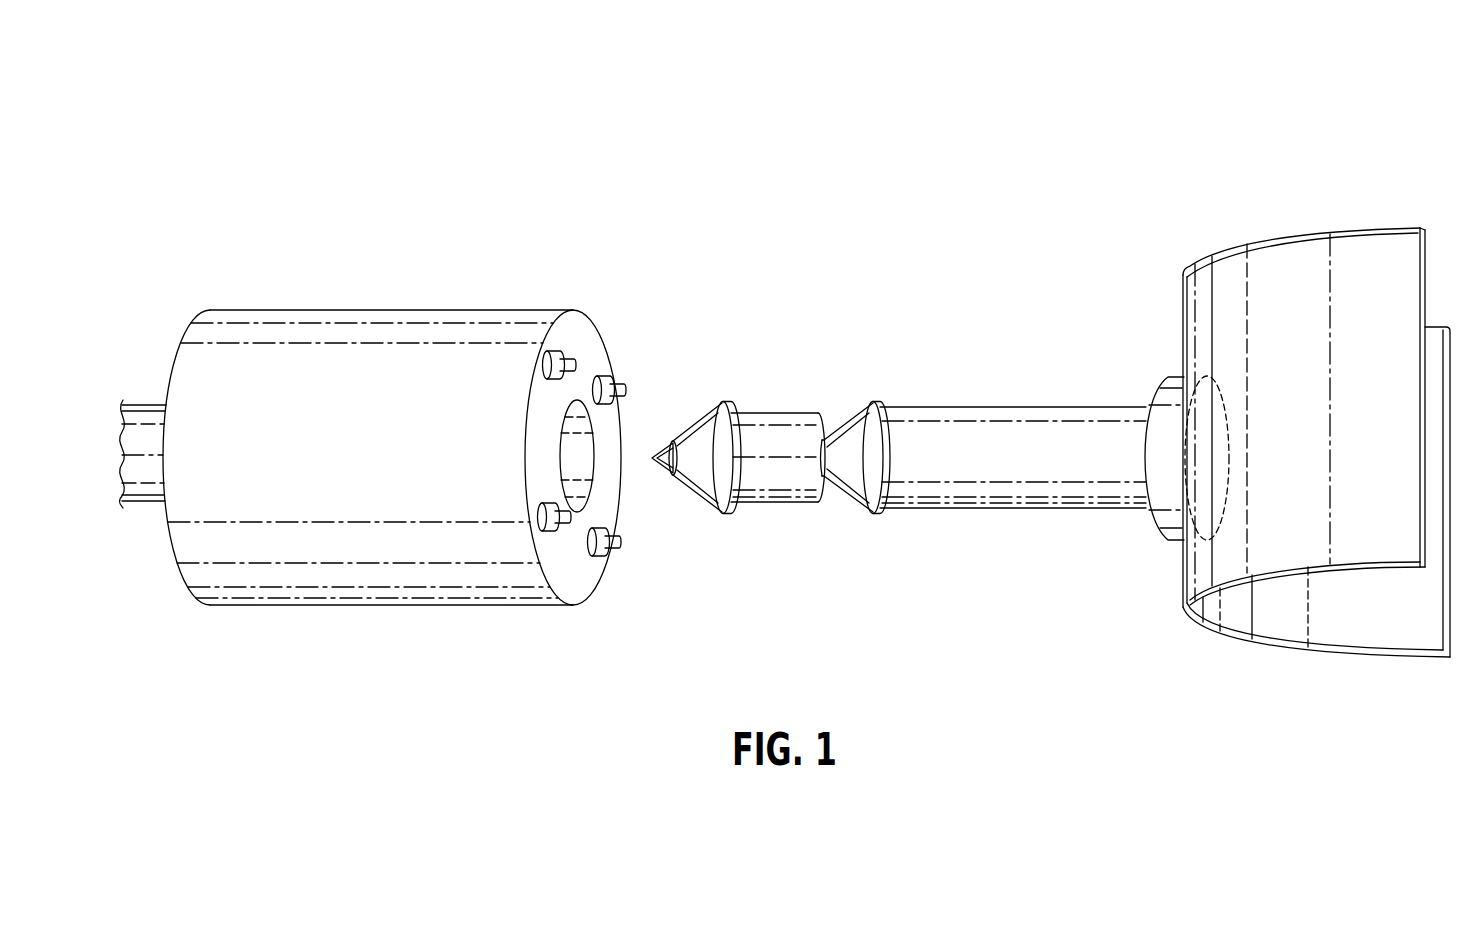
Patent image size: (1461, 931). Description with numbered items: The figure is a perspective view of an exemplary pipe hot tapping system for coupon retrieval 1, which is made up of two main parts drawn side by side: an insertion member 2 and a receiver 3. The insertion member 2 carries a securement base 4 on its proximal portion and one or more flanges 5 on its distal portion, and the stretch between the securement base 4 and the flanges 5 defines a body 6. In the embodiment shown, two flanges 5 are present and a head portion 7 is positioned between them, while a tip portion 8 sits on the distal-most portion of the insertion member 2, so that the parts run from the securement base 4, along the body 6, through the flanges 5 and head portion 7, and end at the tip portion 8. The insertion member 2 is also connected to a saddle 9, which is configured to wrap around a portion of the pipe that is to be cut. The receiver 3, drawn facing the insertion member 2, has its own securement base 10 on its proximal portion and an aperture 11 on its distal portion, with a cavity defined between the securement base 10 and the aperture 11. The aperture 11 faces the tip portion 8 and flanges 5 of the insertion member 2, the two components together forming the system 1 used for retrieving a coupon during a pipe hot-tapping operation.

The pipe hot tapping system for coupon retrieval 1 is at (455, 138).
The insertion member 2 is at (1425, 150).
The receiver 3 is at (192, 240).
The securement base 4 is at (1170, 377).
The flange 5 is at (721, 403).
The body 6 is at (1000, 407).
The head portion 7 is at (775, 412).
The tip portion 8 is at (653, 452).
The saddle 9 is at (1285, 650).
The securement base 10 is at (148, 490).
The aperture 11 is at (592, 485).